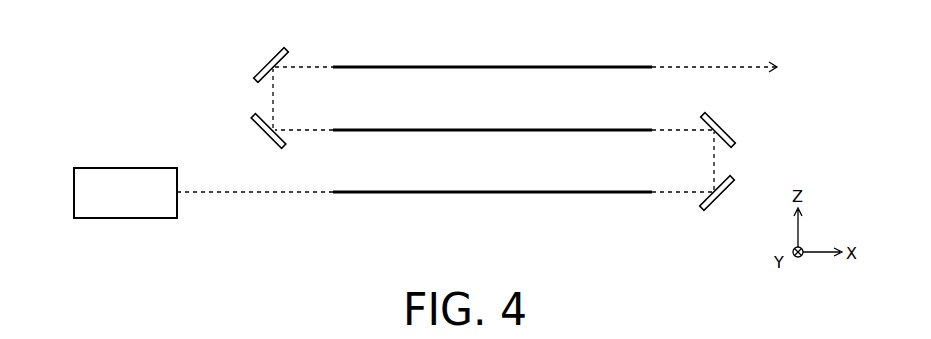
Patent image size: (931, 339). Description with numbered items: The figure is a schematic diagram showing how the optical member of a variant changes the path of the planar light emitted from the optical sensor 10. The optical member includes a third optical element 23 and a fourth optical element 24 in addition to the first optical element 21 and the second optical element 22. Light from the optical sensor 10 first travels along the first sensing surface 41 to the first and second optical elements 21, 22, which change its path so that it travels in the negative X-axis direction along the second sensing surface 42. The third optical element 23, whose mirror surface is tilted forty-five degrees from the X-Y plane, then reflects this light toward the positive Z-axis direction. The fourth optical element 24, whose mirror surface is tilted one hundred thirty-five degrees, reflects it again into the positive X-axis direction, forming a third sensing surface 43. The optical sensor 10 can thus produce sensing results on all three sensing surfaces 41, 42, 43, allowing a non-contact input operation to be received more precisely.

The optical sensor 10 is at (97, 168).
The first optical element 21 is at (733, 178).
The second optical element 22 is at (705, 116).
The third optical element 23 is at (257, 117).
The fourth optical element 24 is at (277, 52).
The first sensing surface 41 is at (584, 192).
The second sensing surface 42 is at (584, 130).
The third sensing surface 43 is at (584, 67).